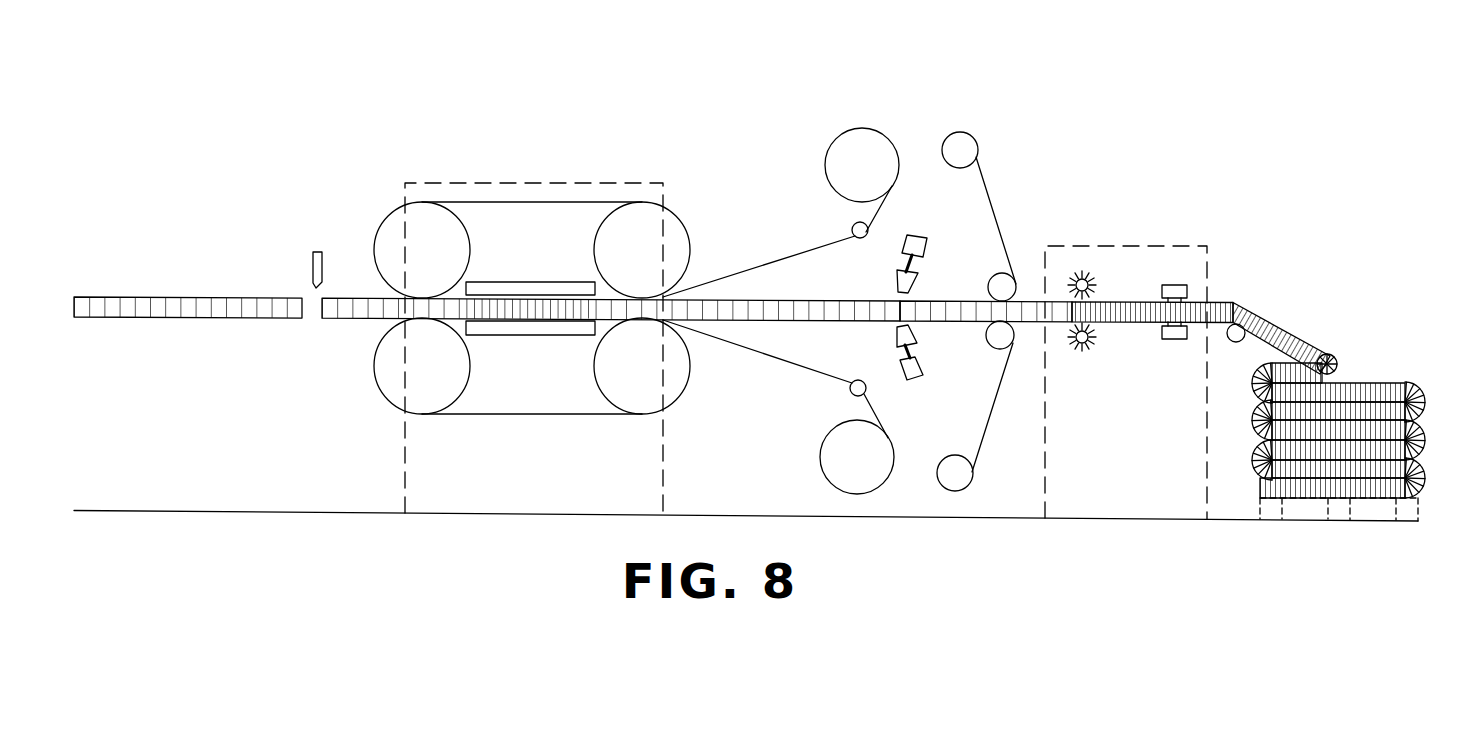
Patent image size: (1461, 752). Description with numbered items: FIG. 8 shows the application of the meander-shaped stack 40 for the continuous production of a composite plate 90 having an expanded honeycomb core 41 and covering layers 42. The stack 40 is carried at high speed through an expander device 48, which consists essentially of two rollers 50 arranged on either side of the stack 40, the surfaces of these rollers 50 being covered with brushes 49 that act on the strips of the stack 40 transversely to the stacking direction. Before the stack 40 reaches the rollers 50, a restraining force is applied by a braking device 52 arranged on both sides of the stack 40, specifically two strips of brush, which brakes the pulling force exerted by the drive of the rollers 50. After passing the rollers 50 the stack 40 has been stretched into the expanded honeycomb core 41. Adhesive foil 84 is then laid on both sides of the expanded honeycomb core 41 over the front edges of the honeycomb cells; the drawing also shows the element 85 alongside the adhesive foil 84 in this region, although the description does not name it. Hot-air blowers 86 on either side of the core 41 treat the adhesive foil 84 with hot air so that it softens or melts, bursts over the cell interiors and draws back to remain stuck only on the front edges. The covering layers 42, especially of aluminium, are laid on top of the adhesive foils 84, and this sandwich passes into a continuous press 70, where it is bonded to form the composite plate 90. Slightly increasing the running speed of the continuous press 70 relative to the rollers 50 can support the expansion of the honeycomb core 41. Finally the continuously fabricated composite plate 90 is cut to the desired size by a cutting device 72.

The stack 40 is at (1280, 320).
The expanded honeycomb core 41 is at (962, 321).
The covering layers 42 is at (760, 265).
The expander device 48 is at (1146, 228).
The brushes 49 is at (1075, 275).
The rollers 50 is at (1085, 275).
The braking device 52 is at (1178, 284).
The continuous press 70 is at (531, 168).
The cutting device 72 is at (318, 252).
The adhesive foil 84 is at (992, 205).
The tape web and rollers 85 is at (1007, 255).
The hot-air blowers 86 is at (908, 235).
The composite plate 90 is at (365, 297).